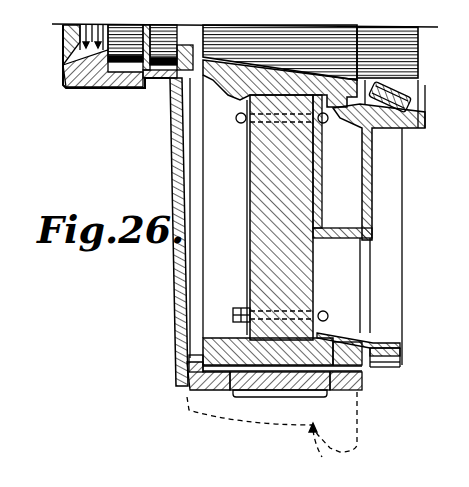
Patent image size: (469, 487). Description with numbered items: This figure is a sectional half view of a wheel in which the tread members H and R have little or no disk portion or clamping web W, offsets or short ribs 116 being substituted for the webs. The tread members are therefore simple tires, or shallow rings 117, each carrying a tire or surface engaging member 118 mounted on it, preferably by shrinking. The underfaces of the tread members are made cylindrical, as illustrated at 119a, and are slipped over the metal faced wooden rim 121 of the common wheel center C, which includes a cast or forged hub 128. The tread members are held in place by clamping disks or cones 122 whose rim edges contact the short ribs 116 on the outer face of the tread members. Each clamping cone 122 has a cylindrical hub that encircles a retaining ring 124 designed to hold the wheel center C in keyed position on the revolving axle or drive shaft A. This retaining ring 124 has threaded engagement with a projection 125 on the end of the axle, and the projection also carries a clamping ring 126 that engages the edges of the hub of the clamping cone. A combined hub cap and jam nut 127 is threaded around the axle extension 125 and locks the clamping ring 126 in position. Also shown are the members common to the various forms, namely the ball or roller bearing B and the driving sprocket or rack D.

The offsets or short ribs 116 is at (196, 362).
The shallow rings 117 is at (207, 394).
The tire or surface engaging member 118 is at (293, 404).
The cylindrical bearing faces 119a is at (227, 374).
The metal faced wooden rim 121 is at (218, 344).
The clamping disks or cones 122 is at (175, 186).
The retaining ring 124 is at (158, 78).
The projection 125 is at (63, 66).
The clamping ring 126 is at (108, 88).
The combined hub cap and jam nut 127 is at (100, 88).
The cast or forged hub 128 is at (301, 78).
The revolving axle or drive shaft A is at (375, 42).
The ball or roller bearing B is at (419, 89).
The wheel center C is at (302, 265).
The driving sprocket or rack D is at (404, 349).
The tread member H is at (360, 392).
The tread member R is at (272, 437).
The web or spoke portion W is at (207, 388).